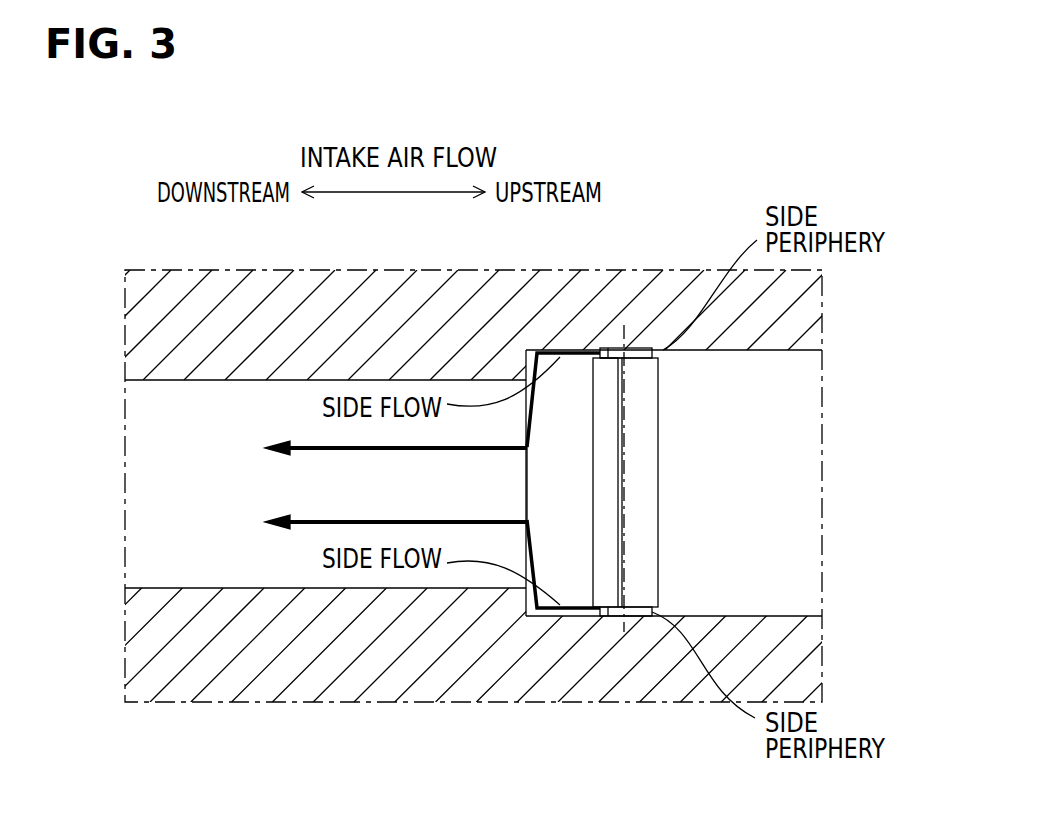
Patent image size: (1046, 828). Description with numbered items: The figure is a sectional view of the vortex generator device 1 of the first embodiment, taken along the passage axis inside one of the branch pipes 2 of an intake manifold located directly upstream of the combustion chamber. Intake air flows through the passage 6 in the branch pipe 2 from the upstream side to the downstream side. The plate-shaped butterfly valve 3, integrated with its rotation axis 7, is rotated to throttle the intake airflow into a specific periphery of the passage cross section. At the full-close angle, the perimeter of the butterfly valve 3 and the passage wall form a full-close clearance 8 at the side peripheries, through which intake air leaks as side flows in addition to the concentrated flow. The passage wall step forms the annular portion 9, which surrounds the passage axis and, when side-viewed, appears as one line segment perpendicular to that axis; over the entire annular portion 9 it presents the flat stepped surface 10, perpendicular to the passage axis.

The vortex generator device 1 is at (133, 228).
The branch pipe 2 is at (185, 683).
The butterfly valve 3 is at (643, 498).
The passage 6 is at (145, 471).
The rotation axis 7 is at (608, 350).
The full-close clearance 8 is at (652, 350).
The annular portion 9 is at (527, 480).
The stepped surface 10 is at (530, 617).